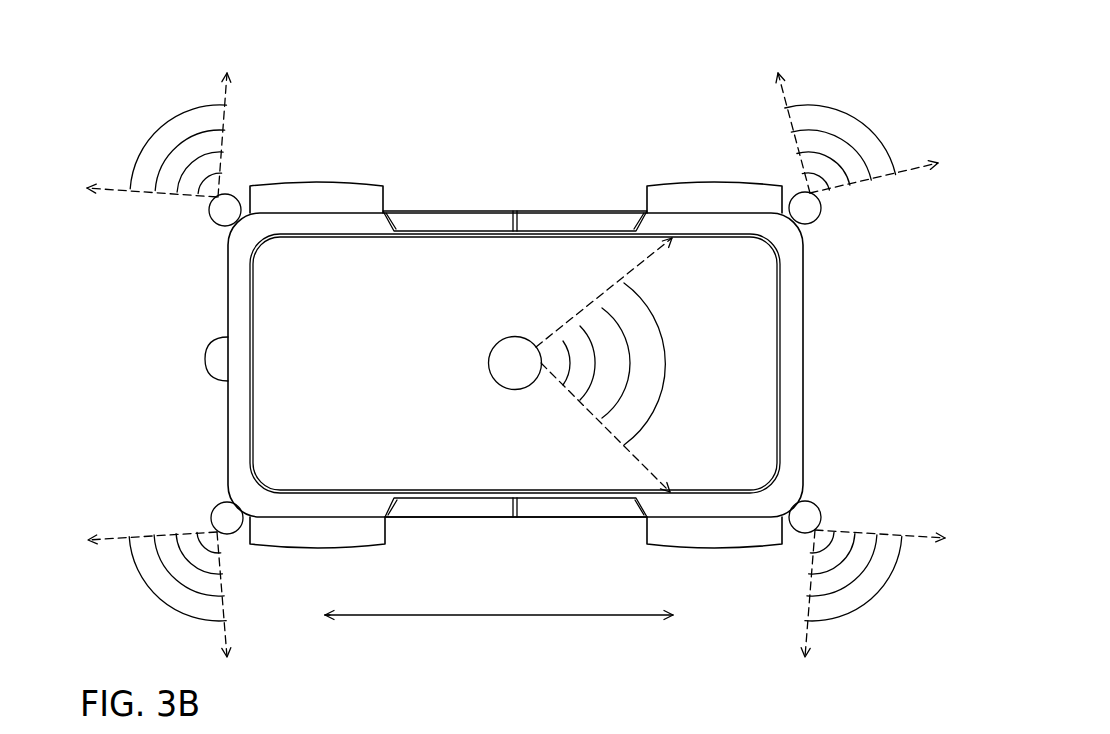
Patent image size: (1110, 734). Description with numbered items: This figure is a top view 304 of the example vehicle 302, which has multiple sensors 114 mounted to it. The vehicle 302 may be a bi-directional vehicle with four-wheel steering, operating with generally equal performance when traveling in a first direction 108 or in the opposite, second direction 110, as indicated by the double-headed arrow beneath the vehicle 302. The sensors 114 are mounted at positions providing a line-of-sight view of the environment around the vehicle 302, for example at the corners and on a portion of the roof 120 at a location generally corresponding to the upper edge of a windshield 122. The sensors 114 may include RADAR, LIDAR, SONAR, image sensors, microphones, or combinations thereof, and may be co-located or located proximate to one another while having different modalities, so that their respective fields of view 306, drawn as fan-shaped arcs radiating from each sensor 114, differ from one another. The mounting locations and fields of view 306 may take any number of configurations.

The top view 304 is at (402, 52).
The vehicle 302 is at (433, 250).
The roof 120 is at (515, 363).
The sensors 114 is at (845, 246).
The fields of view 306 is at (165, 117).
The windshield 122 is at (792, 325).
The first direction 108 is at (185, 437).
The second direction 110 is at (330, 633).